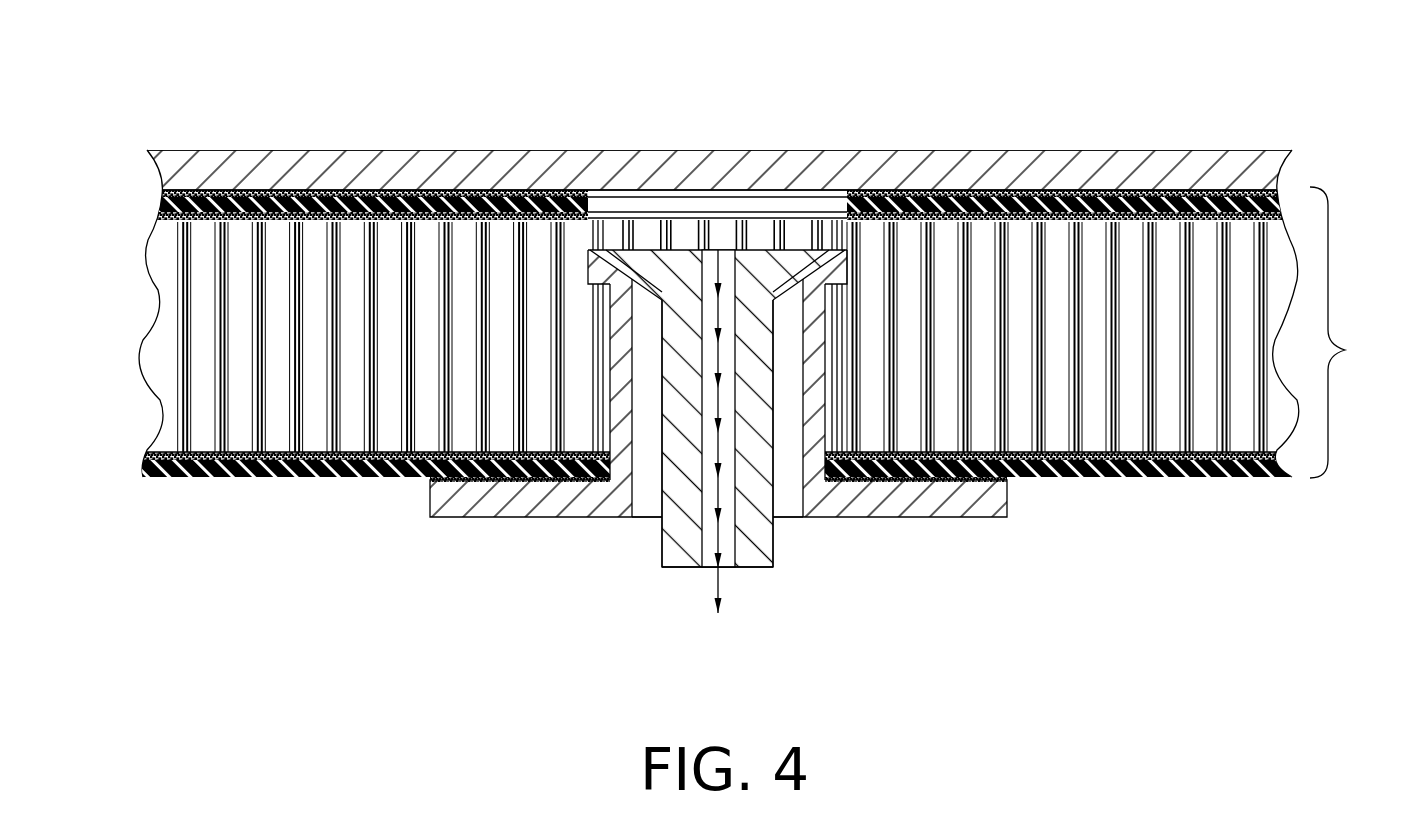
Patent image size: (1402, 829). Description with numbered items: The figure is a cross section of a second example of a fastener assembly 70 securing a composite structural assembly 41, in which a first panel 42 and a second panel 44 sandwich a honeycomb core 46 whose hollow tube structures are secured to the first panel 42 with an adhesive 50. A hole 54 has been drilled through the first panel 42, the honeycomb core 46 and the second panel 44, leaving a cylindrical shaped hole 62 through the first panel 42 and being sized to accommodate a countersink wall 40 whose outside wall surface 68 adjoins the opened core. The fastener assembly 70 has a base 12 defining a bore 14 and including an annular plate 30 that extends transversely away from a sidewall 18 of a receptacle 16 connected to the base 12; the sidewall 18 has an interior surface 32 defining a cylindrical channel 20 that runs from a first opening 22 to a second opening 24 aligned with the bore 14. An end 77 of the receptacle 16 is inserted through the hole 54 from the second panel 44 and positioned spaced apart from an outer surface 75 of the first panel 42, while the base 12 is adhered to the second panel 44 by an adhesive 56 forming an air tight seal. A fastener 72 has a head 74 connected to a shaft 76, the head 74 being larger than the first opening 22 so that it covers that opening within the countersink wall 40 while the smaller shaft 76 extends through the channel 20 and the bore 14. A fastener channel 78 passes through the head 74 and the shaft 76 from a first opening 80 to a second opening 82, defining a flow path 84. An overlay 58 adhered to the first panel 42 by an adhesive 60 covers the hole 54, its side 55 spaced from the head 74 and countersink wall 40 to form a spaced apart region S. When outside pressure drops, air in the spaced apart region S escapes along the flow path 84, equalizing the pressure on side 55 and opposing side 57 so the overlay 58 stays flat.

The base 12 is at (960, 510).
The bore 14 is at (655, 525).
The receptacle 16 is at (617, 305).
The sidewall 18 is at (623, 338).
The channel 20 is at (805, 417).
The first opening 22 is at (784, 300).
The second opening 24 is at (790, 482).
The annular plate 30 is at (482, 505).
The interior surface 32 is at (633, 420).
The countersink wall 40 is at (990, 200).
The composite structural assembly 41 is at (1356, 332).
The first panel 42 is at (1283, 163).
The second panel 44 is at (1165, 478).
The honeycomb core 46 is at (205, 335).
The adhesive 50 is at (165, 210).
The hole 54 is at (692, 228).
The side 55 is at (666, 205).
The adhesive 56 is at (1007, 478).
The opposing side 57 is at (456, 150).
The overlay 58 is at (376, 165).
The adhesive 60 is at (332, 194).
The cylindrical shaped hole 62 is at (637, 196).
The outside wall surface 68 is at (840, 263).
The fastener assembly 70 is at (795, 258).
The fastener 72 is at (670, 372).
The head 74 is at (837, 262).
The outer surface 75 is at (1215, 205).
The shaft 76 is at (755, 495).
The end 77 is at (593, 300).
The fastener channel 78 is at (718, 468).
The first opening 80 is at (735, 230).
The second opening 82 is at (727, 570).
The flow path 84 is at (717, 541).
The spaced apart region S is at (760, 238).